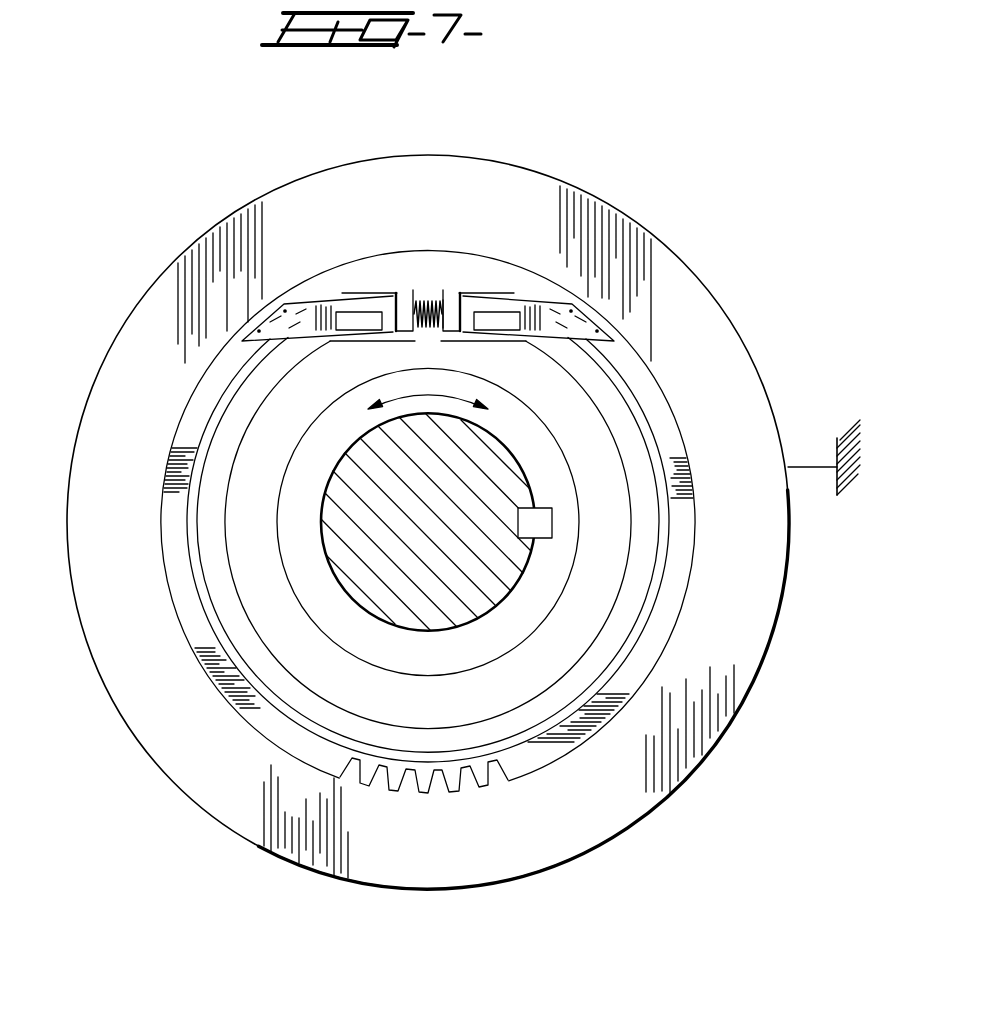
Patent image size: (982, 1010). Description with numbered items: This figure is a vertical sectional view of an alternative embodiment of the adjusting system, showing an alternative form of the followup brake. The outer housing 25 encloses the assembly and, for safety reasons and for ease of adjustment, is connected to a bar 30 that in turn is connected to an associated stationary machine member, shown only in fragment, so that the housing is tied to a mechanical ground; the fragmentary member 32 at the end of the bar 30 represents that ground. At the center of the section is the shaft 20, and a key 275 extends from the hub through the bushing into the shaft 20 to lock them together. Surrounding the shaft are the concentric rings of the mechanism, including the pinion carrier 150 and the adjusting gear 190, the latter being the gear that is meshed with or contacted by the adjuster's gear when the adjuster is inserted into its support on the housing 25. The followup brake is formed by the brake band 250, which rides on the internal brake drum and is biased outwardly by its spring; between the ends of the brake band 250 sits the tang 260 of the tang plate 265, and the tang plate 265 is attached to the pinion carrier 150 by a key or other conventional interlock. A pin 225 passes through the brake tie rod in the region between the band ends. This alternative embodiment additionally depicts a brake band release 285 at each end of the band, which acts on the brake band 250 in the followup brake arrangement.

The shaft 20 is at (346, 474).
The housing 25 is at (401, 198).
The bar 30 is at (810, 465).
The fixed support 32 is at (850, 418).
The pinion carrier 150 is at (476, 662).
The adjusting gear 190 is at (262, 735).
The pin 225 is at (426, 300).
The brake band 250 is at (396, 292).
The tang 260 is at (440, 300).
The tang plate 265 is at (502, 367).
The key 275 is at (534, 528).
The brake band release 285 is at (428, 320).